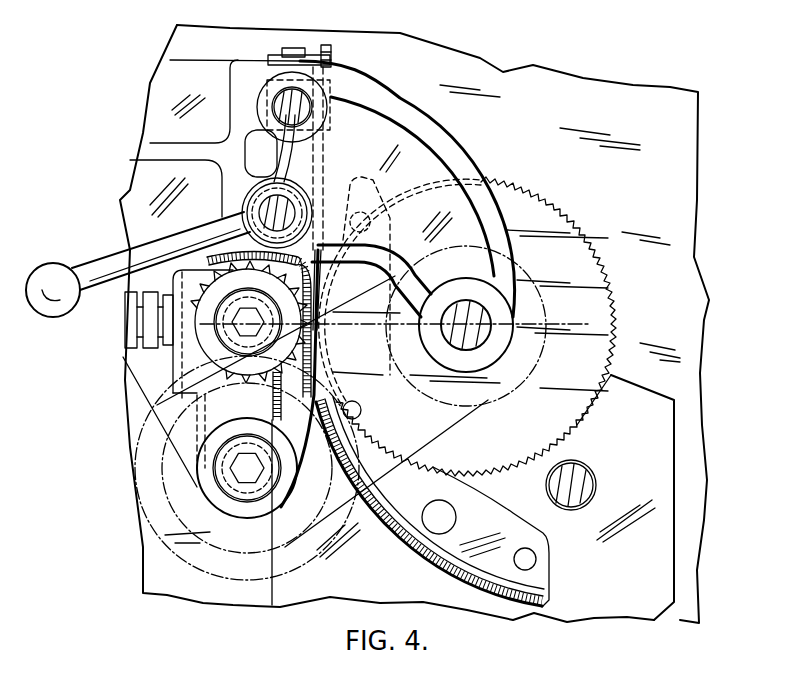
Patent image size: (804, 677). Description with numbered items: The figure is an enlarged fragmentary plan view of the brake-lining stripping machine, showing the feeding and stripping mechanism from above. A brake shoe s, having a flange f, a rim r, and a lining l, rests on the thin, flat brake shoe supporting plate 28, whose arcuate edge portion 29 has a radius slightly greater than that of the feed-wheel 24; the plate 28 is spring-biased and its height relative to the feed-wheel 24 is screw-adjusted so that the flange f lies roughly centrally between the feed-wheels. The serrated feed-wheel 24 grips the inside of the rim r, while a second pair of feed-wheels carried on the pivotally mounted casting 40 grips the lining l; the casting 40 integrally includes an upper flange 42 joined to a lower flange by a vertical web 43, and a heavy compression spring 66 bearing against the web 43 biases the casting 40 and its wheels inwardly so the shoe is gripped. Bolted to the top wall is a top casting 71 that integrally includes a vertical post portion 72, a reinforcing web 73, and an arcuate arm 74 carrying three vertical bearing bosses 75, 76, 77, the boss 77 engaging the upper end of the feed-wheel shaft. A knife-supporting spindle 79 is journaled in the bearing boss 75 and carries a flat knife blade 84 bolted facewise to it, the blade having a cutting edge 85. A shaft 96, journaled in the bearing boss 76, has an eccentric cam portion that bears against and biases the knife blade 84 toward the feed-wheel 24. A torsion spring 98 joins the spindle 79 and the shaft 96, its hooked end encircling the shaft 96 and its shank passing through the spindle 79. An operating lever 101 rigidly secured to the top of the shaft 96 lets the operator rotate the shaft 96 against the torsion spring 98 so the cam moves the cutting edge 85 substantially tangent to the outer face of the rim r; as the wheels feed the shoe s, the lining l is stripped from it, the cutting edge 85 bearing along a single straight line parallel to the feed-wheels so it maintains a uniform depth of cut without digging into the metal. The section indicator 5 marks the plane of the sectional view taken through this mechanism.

The top casting 71 is at (203, 52).
The vertical post portion 72 is at (250, 73).
The reinforcing web 73 is at (178, 147).
The knife-supporting spindle 79 is at (273, 107).
The bearing boss 75 is at (320, 125).
The torsion spring 98 is at (283, 153).
The shaft 96 is at (257, 193).
The bearing boss 76 is at (312, 180).
The arcuate arm 74 is at (447, 140).
The feed-wheel 24 is at (594, 267).
The arcuate edge portion 29 is at (592, 413).
The bearing boss 77 is at (492, 353).
The brake shoe supporting plate 28 is at (664, 525).
The flange f is at (485, 518).
The lining l is at (433, 570).
The brake shoe s is at (556, 565).
The rim r is at (547, 603).
The knife blade 84 is at (322, 278).
The cutting edge 85 is at (300, 330).
The operating lever 101 is at (102, 265).
The compression spring 66 is at (160, 350).
The vertical web 43 is at (177, 365).
The upper flange 42 is at (200, 413).
The casting 40 is at (172, 461).
The section line 5 is at (88, 320).